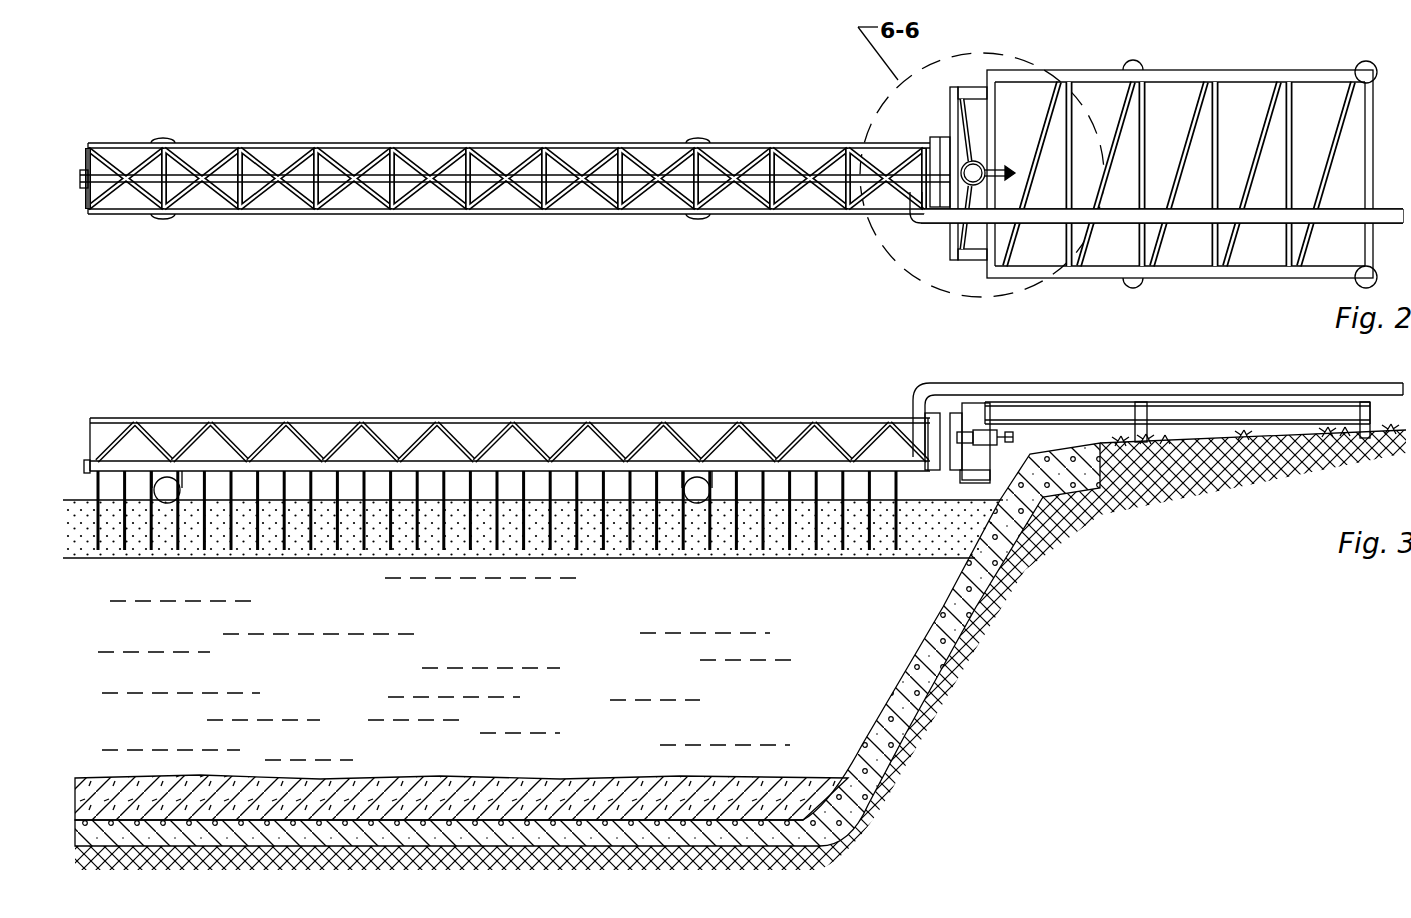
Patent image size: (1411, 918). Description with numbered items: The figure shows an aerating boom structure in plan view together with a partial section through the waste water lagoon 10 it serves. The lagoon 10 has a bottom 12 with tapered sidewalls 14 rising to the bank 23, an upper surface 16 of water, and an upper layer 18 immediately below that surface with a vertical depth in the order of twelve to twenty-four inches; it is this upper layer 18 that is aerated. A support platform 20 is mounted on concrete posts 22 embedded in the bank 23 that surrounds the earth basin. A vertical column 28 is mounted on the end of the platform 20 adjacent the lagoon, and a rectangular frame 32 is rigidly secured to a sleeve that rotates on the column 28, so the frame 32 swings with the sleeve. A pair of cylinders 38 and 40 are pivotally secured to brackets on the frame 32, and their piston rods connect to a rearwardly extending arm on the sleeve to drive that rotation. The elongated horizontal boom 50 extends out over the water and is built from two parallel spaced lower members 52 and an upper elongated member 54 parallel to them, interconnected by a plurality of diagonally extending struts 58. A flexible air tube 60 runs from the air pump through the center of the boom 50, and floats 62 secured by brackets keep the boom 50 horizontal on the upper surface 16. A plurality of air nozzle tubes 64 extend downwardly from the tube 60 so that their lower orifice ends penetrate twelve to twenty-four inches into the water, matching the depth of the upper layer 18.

In FIG. 3, the lagoon 10 is at (900, 626).
In FIG. 3, the bottom 12 is at (778, 815).
In FIG. 3, the tapered sidewalls 14 is at (938, 612).
In FIG. 3, the upper surface 16 is at (675, 449).
In FIG. 3, the upper layer 18 is at (935, 556).
In FIG. 2, the support platform 20 is at (1133, 268).
In FIG. 3, the support platform 20 is at (1128, 432).
In FIG. 2, the concrete posts 22 is at (1358, 68).
In FIG. 3, the concrete posts 22 is at (1183, 405).
In FIG. 3, the bank 23 is at (1192, 500).
In FIG. 2, the vertical column 28 is at (966, 165).
In FIG. 3, the vertical column 28 is at (936, 382).
In FIG. 2, the rectangular frame 32 is at (945, 222).
In FIG. 3, the rectangular frame 32 is at (938, 410).
In FIG. 2, the cylinder 38 is at (966, 104).
In FIG. 2, the cylinder 40 is at (970, 240).
In FIG. 2, the elongated horizontal boom 50 is at (513, 150).
In FIG. 3, the elongated horizontal boom 50 is at (477, 466).
In FIG. 2, the lower members 52 is at (527, 215).
In FIG. 3, the lower members 52 is at (527, 466).
In FIG. 2, the upper elongated member 54 is at (718, 191).
In FIG. 3, the upper elongated member 54 is at (675, 418).
In FIG. 2, the diagonally extending struts 58 is at (636, 212).
In FIG. 3, the diagonally extending struts 58 is at (650, 455).
In FIG. 2, the flexible air tube 60 is at (660, 220).
In FIG. 3, the flexible air tube 60 is at (578, 478).
In FIG. 2, the floats 62 is at (165, 216).
In FIG. 3, the floats 62 is at (167, 480).
In FIG. 3, the air nozzle tubes 64 is at (240, 470).